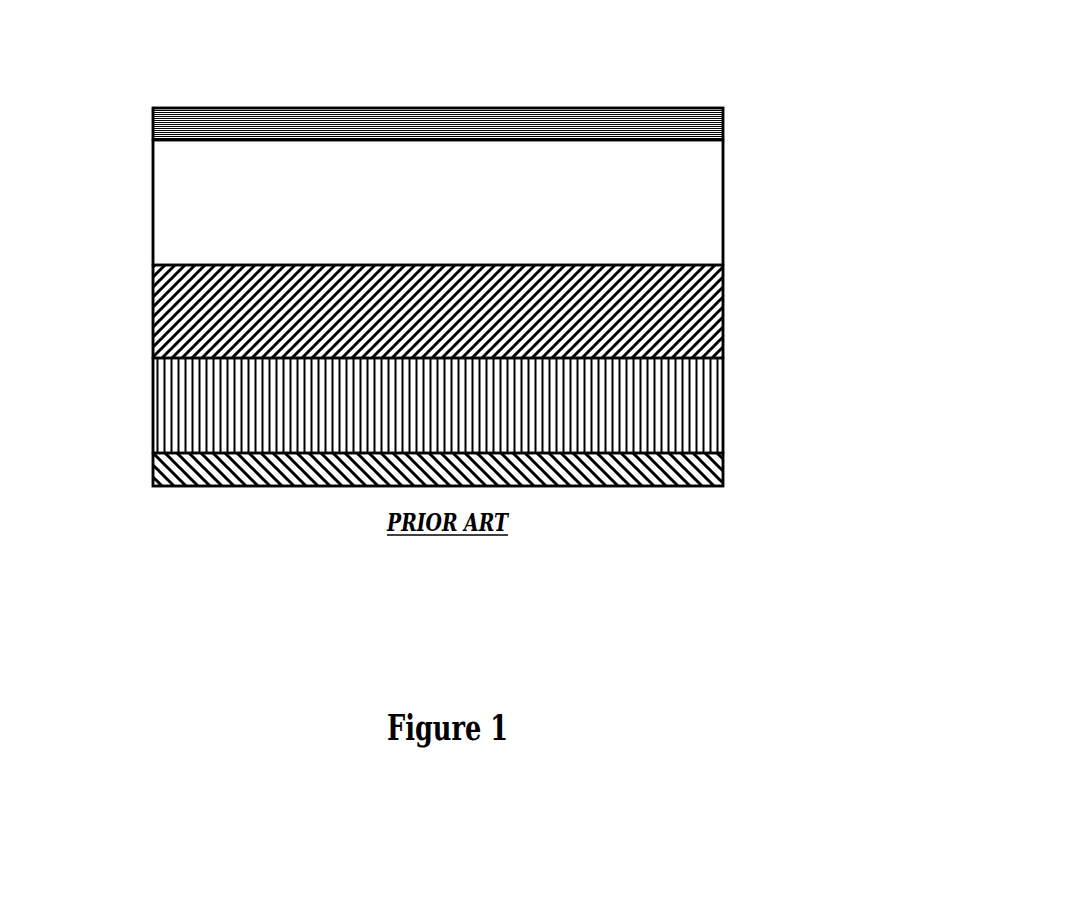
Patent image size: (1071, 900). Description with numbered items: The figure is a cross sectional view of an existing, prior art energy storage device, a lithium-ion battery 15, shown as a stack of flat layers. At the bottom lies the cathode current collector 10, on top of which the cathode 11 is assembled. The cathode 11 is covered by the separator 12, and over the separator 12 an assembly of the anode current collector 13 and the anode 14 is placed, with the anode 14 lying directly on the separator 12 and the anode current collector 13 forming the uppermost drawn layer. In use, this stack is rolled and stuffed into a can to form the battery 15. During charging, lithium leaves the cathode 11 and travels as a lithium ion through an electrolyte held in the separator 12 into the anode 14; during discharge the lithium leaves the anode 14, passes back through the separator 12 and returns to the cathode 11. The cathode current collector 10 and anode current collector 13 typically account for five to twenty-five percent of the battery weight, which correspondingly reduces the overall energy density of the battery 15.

The cathode current collector 10 is at (212, 470).
The cathode 11 is at (173, 395).
The separator 12 is at (695, 315).
The anode current collector 13 is at (645, 125).
The anode 14 is at (180, 200).
The lithium-ion battery 15 is at (293, 547).